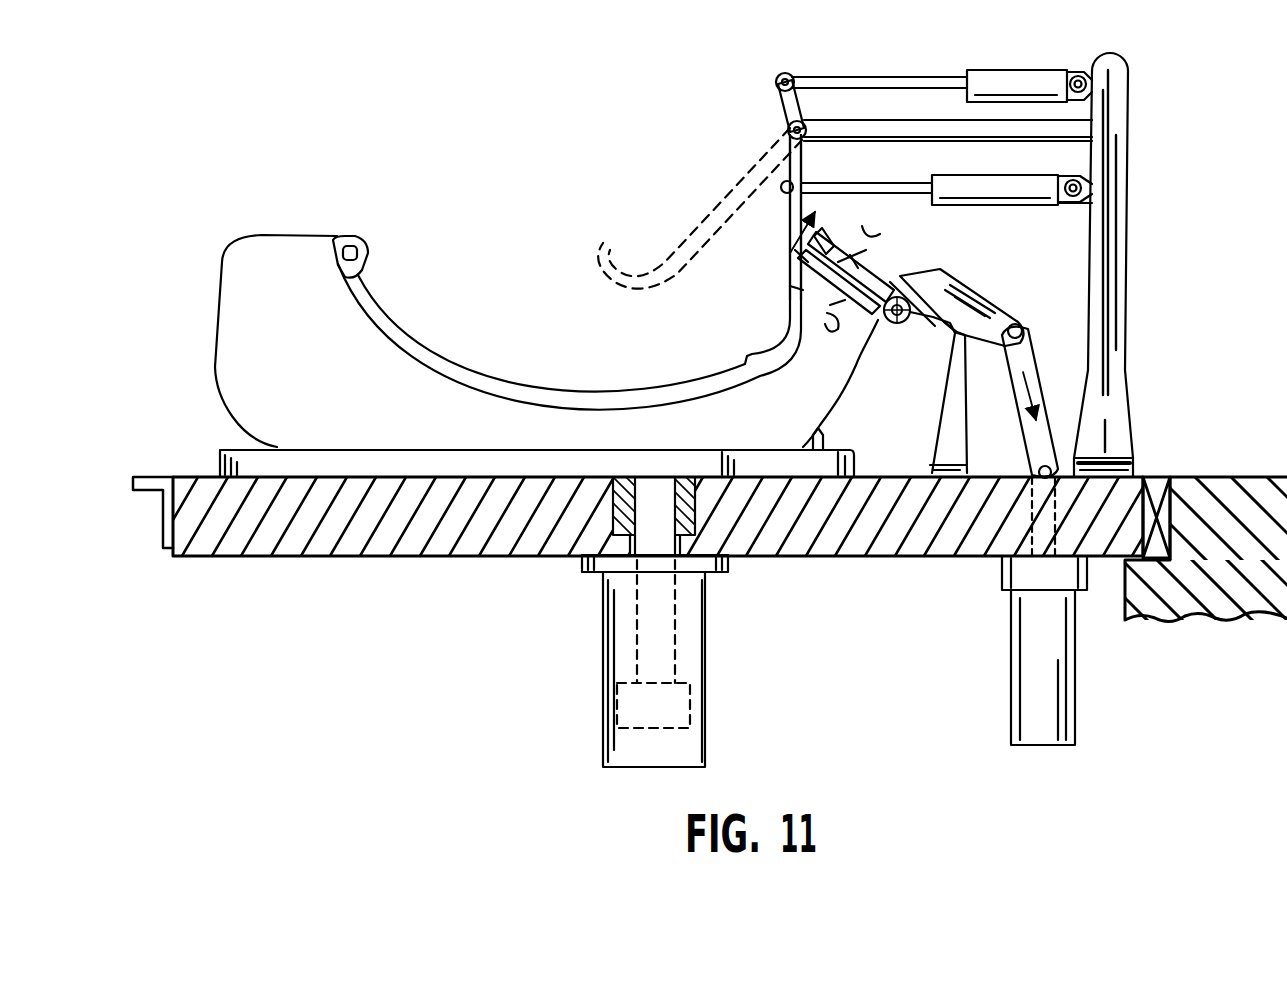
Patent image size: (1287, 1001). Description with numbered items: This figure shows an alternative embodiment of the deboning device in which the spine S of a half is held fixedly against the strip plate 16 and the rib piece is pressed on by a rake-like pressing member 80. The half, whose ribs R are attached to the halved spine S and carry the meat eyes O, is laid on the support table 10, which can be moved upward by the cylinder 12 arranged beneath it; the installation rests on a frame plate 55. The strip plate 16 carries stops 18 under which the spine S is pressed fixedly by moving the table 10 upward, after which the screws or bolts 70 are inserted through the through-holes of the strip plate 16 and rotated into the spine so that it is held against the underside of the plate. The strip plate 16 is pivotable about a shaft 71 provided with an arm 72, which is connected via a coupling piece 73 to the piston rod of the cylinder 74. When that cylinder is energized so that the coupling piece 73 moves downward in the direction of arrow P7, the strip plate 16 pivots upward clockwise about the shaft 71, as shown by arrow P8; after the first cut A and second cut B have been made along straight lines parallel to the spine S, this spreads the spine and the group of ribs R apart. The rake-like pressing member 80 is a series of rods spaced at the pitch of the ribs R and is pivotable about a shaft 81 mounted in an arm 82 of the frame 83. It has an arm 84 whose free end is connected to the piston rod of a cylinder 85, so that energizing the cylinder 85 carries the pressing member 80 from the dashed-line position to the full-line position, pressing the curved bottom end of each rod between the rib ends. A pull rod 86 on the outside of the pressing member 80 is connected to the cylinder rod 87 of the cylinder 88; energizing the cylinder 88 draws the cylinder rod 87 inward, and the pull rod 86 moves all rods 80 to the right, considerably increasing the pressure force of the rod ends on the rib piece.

The support table 10 is at (838, 447).
The cylinder 12 is at (705, 645).
The strip plate 16 is at (903, 198).
The stops 18 is at (790, 293).
The frame plate 55 is at (1250, 582).
The screws or bolts 70 is at (876, 268).
The shaft 71 is at (905, 322).
The arm 72 is at (985, 308).
The coupling piece 73 is at (1030, 428).
The cylinder 74 is at (1010, 640).
The rake-like pressing member 80 is at (785, 186).
The shaft 81 is at (787, 132).
The arm 82 is at (935, 125).
The frame 83 is at (1125, 172).
The arm 84 is at (778, 95).
The cylinder 85 is at (845, 75).
The pull rod 86 is at (782, 168).
The cylinder rod 87 is at (900, 185).
The cylinder 88 is at (1010, 205).
The ribs R is at (550, 390).
The spine S is at (793, 257).
The first cut A is at (790, 288).
The second cut B is at (830, 305).
The meat eyes O is at (833, 326).
The arrow P8 is at (794, 244).
The arrow P7 is at (1034, 380).